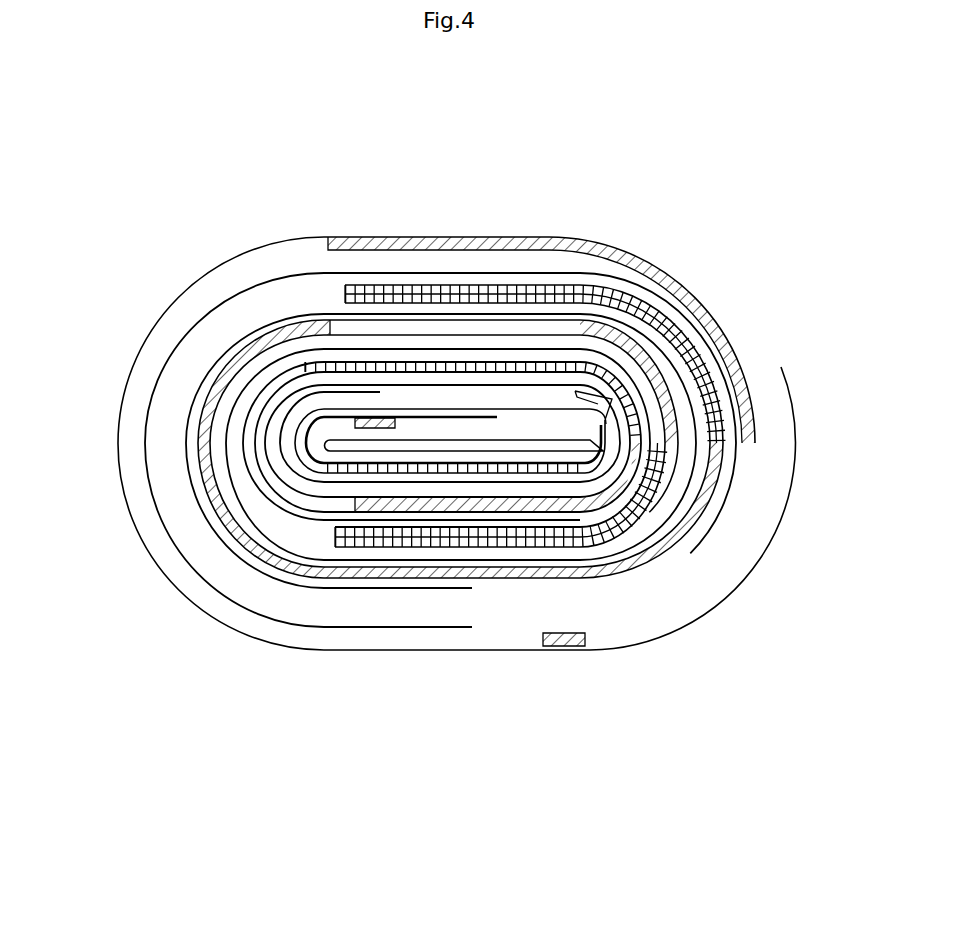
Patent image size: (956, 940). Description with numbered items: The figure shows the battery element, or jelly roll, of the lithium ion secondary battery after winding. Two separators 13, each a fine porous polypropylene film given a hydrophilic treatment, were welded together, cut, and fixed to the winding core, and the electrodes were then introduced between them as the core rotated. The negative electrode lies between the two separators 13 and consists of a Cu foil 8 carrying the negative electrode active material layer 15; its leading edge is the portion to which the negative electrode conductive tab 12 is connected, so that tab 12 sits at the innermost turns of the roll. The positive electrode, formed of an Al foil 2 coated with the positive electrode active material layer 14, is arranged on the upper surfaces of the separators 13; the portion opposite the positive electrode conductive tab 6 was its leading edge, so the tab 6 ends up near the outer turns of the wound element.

The Al foil 2 is at (677, 632).
The positive electrode conductive tab 6 is at (558, 648).
The Cu foil 8 is at (257, 462).
The negative electrode conductive tab 12 is at (379, 425).
The separator 13 is at (212, 306).
The positive electrode active material layer 14 is at (550, 246).
The negative electrode active material layer 15 is at (342, 540).